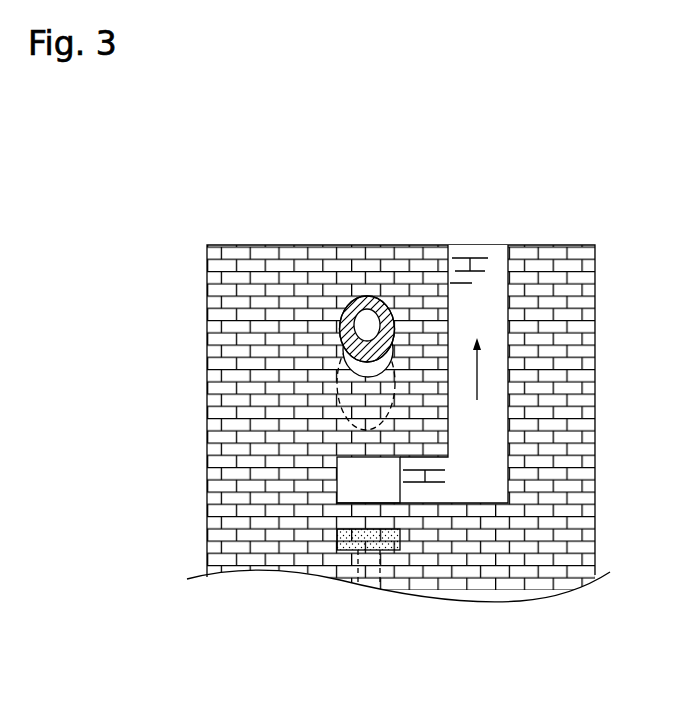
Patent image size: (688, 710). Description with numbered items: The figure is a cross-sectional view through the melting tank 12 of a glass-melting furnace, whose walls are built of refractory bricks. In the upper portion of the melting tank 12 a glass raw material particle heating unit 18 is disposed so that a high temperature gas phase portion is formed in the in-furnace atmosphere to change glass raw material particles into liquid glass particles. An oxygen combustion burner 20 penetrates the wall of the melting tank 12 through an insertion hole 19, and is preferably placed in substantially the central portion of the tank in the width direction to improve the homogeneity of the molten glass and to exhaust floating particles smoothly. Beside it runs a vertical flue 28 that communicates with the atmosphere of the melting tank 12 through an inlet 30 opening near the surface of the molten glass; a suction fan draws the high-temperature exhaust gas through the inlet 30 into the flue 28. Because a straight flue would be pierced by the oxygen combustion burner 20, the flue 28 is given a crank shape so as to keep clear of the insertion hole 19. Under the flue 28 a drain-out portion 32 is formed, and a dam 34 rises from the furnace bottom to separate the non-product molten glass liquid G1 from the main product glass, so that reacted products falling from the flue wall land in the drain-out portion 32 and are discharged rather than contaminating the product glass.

The melting tank 12 is at (551, 245).
The glass raw material particle heating unit 18 is at (368, 294).
The insertion hole 19 is at (357, 385).
The oxygen combustion burner 20 is at (348, 362).
The flue 28 is at (495, 322).
The inlet 30 is at (373, 480).
The drain-out portion 32 is at (368, 525).
The dam 34 is at (387, 522).
The non-product molten glass liquid G1 is at (345, 540).